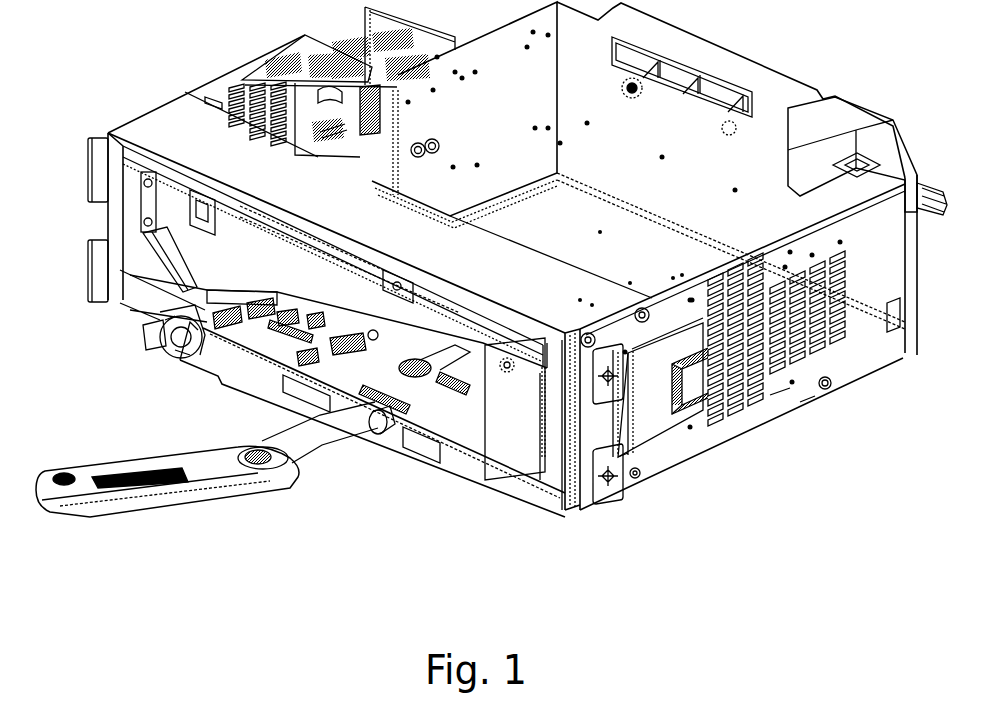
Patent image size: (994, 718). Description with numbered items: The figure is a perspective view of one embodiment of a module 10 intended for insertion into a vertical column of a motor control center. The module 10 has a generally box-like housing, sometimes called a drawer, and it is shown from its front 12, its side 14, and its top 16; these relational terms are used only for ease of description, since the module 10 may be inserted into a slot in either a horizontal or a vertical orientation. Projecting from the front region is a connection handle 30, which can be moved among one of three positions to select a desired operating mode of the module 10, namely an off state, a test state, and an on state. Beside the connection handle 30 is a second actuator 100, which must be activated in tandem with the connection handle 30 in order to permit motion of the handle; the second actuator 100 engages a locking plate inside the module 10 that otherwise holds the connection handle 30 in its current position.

The module 10 is at (128, 118).
The front 12 is at (480, 472).
The side 14 is at (673, 455).
The top 16 is at (160, 130).
The connection handle 30 is at (198, 500).
The second actuator 100 is at (163, 360).